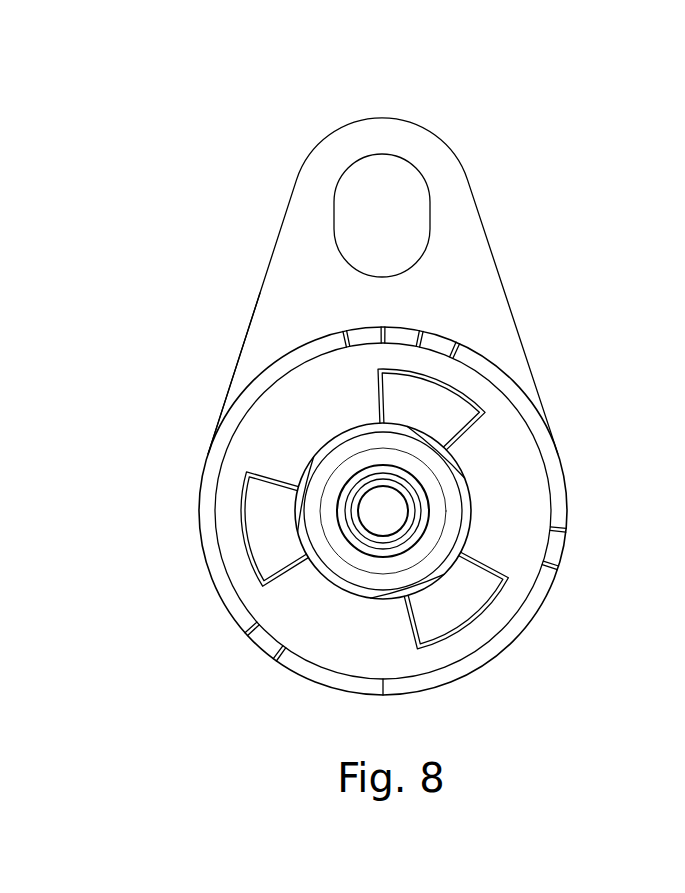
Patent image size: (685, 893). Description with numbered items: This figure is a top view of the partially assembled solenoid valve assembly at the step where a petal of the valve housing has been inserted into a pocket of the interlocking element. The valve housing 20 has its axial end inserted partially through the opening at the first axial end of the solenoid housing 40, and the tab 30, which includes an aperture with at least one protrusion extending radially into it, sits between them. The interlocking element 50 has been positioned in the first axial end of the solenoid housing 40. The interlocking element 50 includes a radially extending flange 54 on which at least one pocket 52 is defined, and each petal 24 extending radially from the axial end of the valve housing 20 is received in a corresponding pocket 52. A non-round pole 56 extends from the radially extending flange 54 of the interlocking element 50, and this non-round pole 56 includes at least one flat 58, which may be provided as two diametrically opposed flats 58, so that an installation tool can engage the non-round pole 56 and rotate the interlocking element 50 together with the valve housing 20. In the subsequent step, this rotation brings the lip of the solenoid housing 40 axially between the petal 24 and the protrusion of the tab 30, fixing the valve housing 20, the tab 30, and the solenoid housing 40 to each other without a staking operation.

The valve housing 20 is at (458, 602).
The petal 24 is at (270, 537).
The tab 30 is at (462, 223).
The solenoid housing 40 is at (207, 434).
The interlocking element 50 is at (518, 450).
The pocket 52 is at (452, 383).
The radially extending flange 54 is at (525, 503).
The non-round pole 56 is at (450, 450).
The flat 58 is at (318, 563).